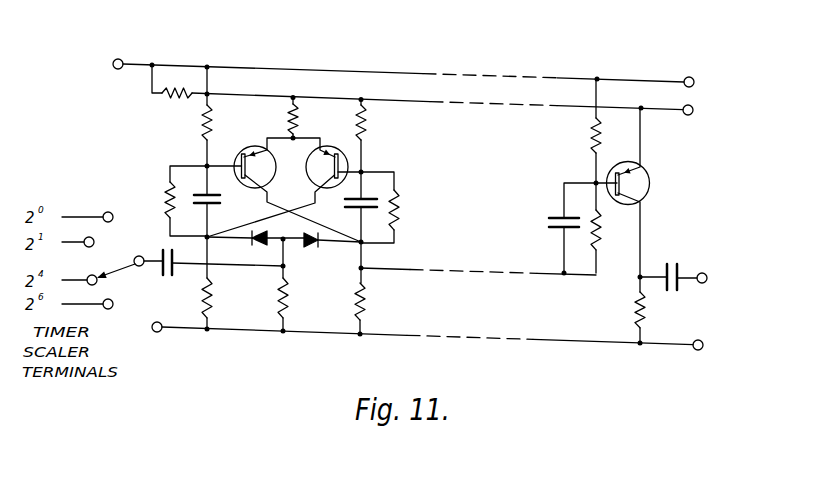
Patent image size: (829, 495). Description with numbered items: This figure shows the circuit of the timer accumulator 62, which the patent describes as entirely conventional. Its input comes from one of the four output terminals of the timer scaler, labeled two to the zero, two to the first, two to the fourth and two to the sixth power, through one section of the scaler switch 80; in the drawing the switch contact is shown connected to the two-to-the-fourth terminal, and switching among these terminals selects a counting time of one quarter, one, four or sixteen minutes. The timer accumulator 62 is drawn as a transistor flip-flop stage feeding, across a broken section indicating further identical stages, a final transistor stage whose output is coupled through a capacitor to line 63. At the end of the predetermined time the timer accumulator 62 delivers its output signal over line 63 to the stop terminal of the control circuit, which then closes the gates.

The timer accumulator 62 is at (408, 193).
The scaler switch 80 is at (124, 262).
The line 63 is at (684, 278).